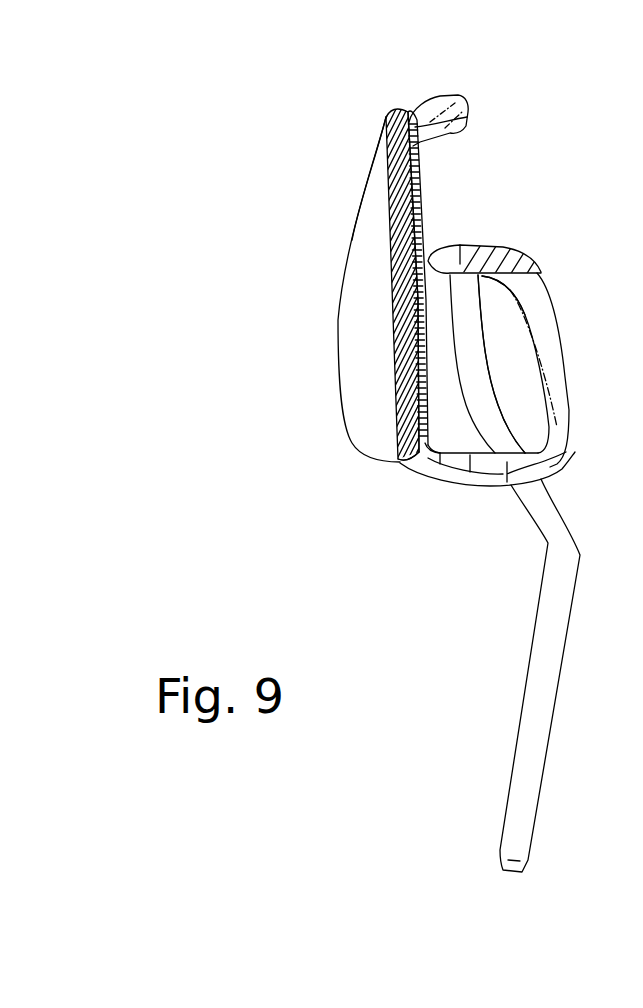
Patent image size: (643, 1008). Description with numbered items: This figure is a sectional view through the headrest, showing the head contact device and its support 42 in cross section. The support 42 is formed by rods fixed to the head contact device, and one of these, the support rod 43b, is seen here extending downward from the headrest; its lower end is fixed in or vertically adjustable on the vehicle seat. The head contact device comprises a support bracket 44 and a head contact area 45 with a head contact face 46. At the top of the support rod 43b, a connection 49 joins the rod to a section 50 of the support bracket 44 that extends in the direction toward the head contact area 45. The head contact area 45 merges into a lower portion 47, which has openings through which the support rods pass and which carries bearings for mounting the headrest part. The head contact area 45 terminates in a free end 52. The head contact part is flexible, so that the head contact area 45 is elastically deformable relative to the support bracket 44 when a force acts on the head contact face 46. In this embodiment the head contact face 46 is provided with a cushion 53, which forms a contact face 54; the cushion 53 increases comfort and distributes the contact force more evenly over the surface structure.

The support 42 is at (523, 430).
The support rod 43b is at (542, 695).
The support bracket 44 is at (558, 300).
The head contact area 45 is at (412, 104).
The head contact face 46 is at (412, 322).
The lower portion 47 is at (471, 489).
The connection 49 is at (540, 284).
The section 50 is at (474, 233).
The free end 52 is at (471, 90).
The cushion 53 is at (371, 180).
The contact face 54 is at (368, 298).